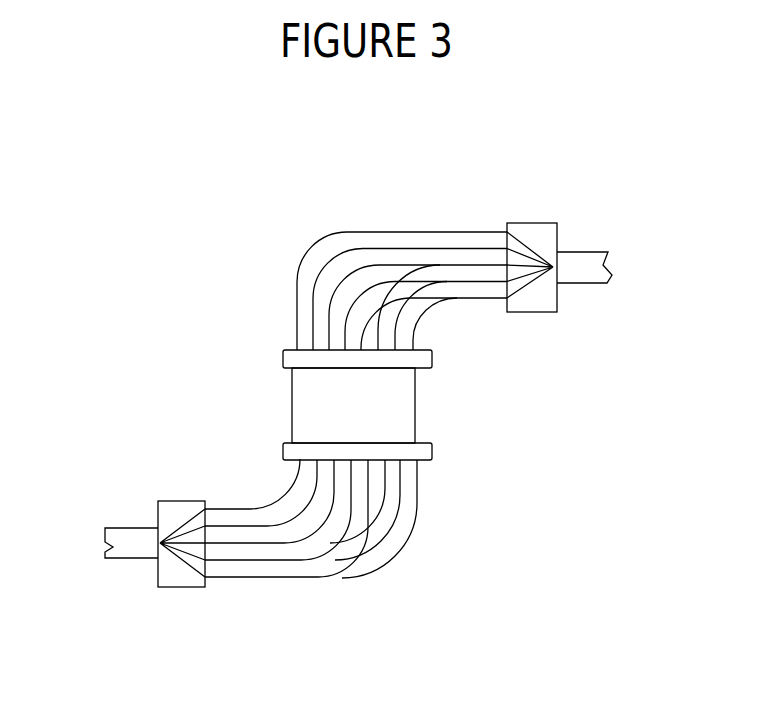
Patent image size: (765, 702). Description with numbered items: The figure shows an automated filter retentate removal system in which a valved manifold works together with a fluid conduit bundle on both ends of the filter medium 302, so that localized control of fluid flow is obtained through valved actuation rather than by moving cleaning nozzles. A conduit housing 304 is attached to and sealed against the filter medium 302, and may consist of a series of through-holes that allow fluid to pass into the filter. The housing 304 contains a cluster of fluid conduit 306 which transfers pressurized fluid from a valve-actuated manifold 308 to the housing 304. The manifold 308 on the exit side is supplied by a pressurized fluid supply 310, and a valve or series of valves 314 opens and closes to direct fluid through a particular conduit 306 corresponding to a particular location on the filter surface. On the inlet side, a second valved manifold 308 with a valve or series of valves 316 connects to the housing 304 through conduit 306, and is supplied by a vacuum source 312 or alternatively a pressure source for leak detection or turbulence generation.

The filter medium 302 is at (365, 384).
The conduit housing 304 is at (287, 430).
The fluid conduit 306 is at (443, 290).
The valve-actuated manifold 308 is at (538, 223).
The pressurized fluid supply 310 is at (585, 295).
The vacuum source 312 is at (137, 565).
The valve 314 is at (553, 255).
The valve 316 is at (183, 588).